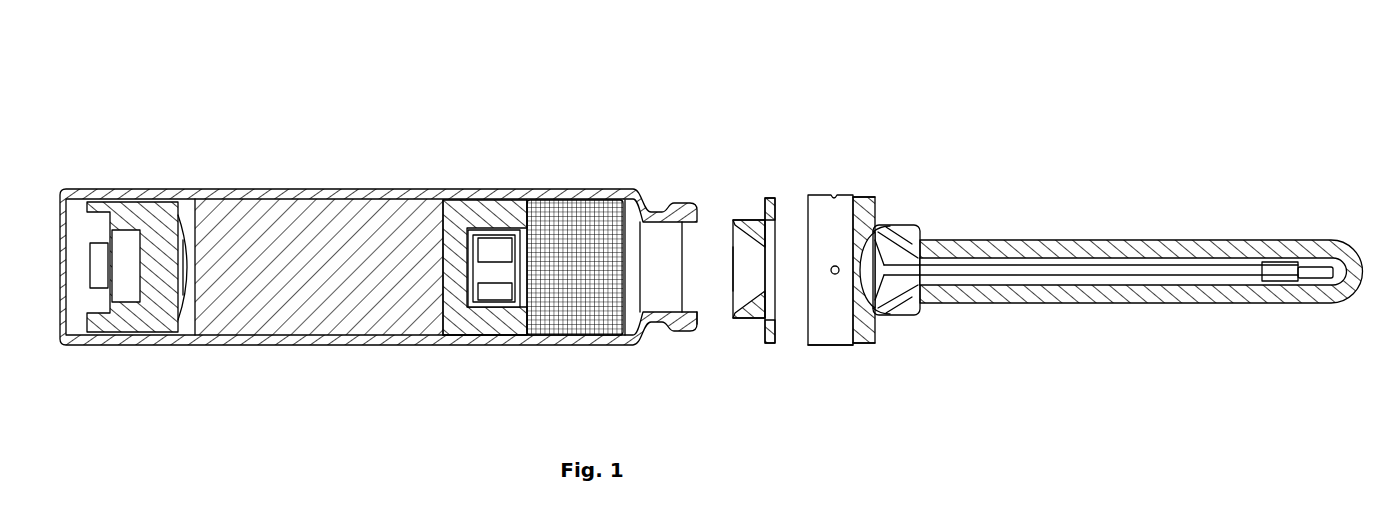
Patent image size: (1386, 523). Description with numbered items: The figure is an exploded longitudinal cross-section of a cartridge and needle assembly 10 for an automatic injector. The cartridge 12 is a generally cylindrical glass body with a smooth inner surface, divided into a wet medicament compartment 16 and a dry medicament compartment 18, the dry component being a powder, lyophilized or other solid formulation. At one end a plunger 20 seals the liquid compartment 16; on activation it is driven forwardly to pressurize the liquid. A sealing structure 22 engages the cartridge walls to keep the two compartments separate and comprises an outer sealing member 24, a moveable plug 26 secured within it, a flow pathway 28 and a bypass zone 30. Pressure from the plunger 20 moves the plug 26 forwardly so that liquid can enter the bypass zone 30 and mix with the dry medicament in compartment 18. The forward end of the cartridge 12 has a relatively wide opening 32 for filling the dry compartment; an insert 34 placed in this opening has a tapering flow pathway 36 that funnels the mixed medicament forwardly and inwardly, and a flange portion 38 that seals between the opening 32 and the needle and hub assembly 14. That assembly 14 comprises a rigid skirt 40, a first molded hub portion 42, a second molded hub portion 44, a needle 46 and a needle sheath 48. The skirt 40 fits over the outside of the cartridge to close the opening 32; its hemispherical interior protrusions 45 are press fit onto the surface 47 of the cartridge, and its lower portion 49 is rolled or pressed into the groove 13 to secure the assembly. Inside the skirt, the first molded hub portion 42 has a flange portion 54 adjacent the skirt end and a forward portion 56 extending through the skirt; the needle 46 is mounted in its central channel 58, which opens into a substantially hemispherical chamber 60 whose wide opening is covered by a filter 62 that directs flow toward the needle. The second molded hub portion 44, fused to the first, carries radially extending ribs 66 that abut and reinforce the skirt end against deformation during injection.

The cartridge and needle assembly 10 is at (186, 112).
The cartridge 12 is at (254, 193).
The groove 13 is at (663, 207).
The needle and hub assembly 14 is at (897, 198).
The wet medicament compartment 16 is at (357, 200).
The dry medicament compartment 18 is at (570, 235).
The plunger 20 is at (128, 332).
The sealing structure 22 is at (452, 332).
The outer sealing member 24 is at (488, 333).
The moveable plug 26 is at (447, 278).
The flow pathway 28 is at (498, 263).
The bypass zone 30 is at (485, 242).
The opening 32 is at (677, 255).
The insert 34 is at (748, 215).
The tapering flow pathway 36 is at (745, 277).
The flange portion 38 is at (771, 343).
The skirt 40 is at (823, 193).
The first molded hub portion 42 is at (873, 200).
The second molded hub portion 44 is at (907, 240).
The hemispherical interior protrusion 45 is at (833, 266).
The needle 46 is at (1073, 262).
The surface 47 is at (681, 347).
The needle sheath 48 is at (1140, 242).
The lower portion 49 is at (815, 345).
The flange portion 54 is at (872, 312).
The forward portion 56 is at (903, 300).
The central channel 58 is at (861, 197).
The chamber 60 is at (890, 290).
The filter 62 is at (860, 345).
The ribs 66 is at (898, 230).